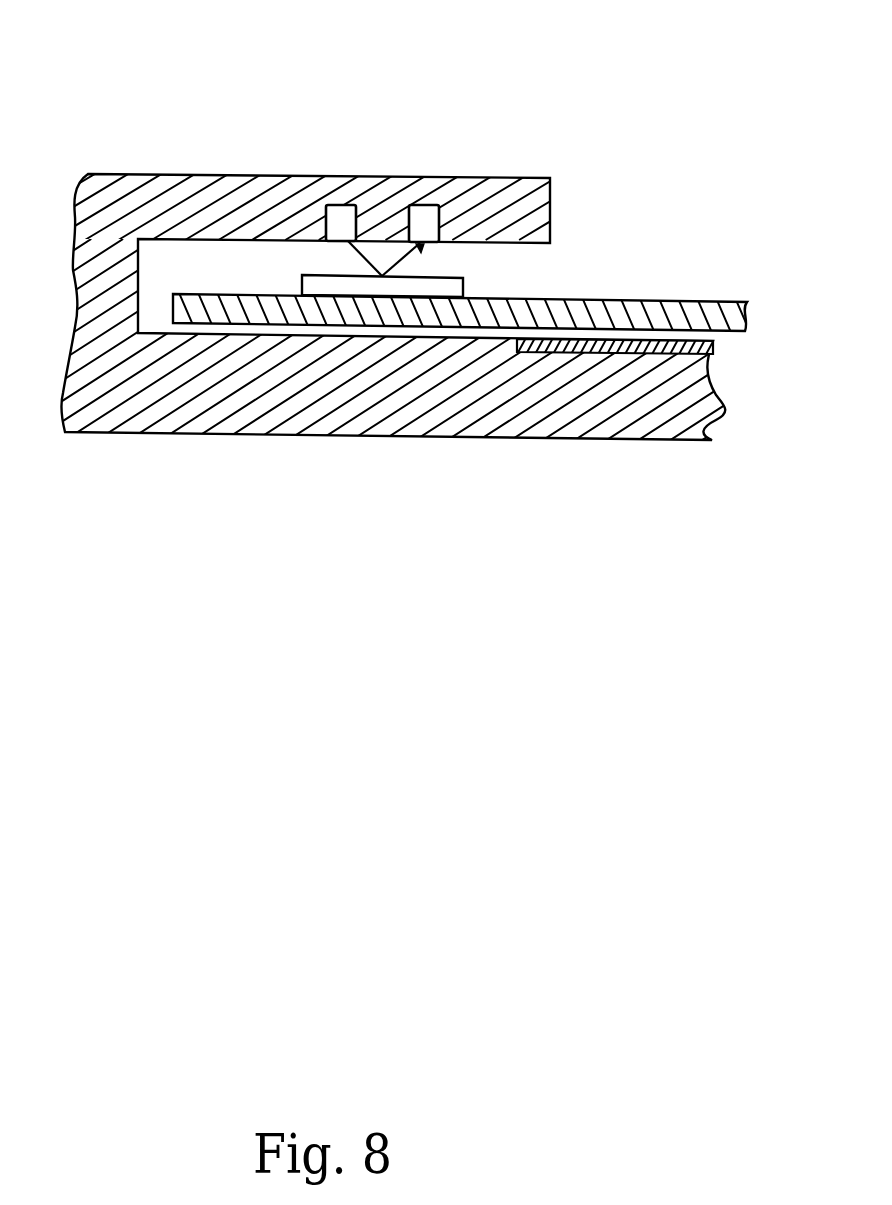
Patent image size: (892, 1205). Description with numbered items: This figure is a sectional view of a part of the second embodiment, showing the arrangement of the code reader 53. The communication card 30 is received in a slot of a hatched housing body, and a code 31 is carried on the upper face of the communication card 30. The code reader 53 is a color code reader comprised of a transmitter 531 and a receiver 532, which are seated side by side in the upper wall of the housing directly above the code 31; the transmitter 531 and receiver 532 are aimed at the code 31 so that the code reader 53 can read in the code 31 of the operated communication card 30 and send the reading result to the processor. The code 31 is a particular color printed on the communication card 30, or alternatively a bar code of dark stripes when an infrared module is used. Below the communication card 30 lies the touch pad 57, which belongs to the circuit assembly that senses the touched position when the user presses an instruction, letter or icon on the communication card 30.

The communication card 30 is at (717, 303).
The code 31 is at (460, 287).
The code reader 53 is at (415, 178).
The transmitter 531 is at (340, 213).
The receiver 532 is at (425, 212).
The touch pad 57 is at (707, 350).